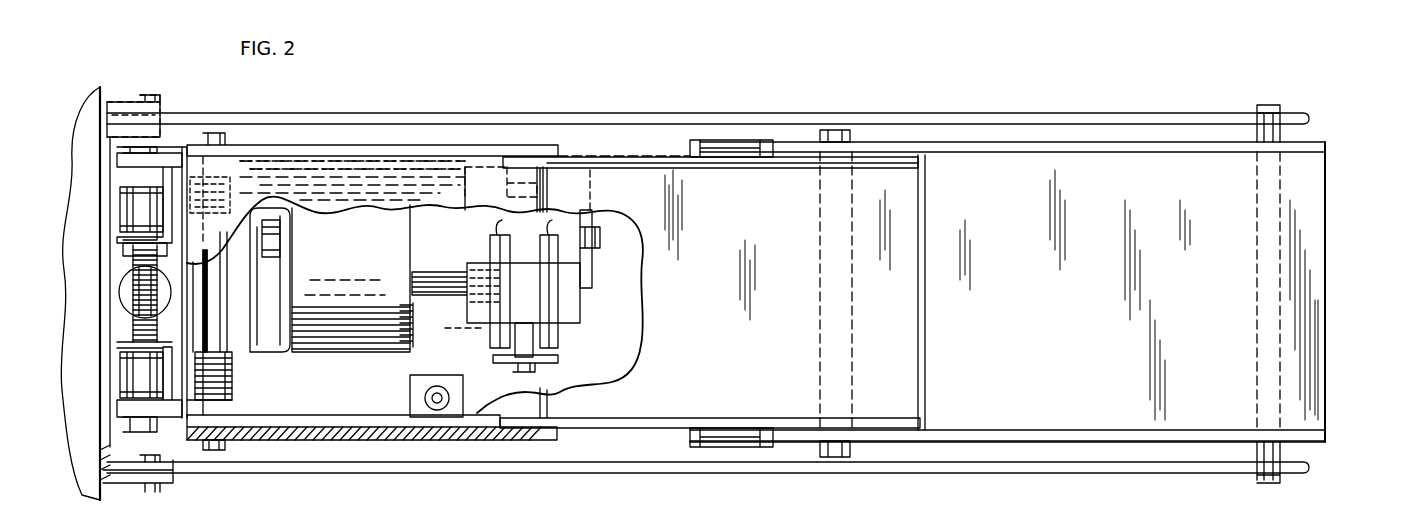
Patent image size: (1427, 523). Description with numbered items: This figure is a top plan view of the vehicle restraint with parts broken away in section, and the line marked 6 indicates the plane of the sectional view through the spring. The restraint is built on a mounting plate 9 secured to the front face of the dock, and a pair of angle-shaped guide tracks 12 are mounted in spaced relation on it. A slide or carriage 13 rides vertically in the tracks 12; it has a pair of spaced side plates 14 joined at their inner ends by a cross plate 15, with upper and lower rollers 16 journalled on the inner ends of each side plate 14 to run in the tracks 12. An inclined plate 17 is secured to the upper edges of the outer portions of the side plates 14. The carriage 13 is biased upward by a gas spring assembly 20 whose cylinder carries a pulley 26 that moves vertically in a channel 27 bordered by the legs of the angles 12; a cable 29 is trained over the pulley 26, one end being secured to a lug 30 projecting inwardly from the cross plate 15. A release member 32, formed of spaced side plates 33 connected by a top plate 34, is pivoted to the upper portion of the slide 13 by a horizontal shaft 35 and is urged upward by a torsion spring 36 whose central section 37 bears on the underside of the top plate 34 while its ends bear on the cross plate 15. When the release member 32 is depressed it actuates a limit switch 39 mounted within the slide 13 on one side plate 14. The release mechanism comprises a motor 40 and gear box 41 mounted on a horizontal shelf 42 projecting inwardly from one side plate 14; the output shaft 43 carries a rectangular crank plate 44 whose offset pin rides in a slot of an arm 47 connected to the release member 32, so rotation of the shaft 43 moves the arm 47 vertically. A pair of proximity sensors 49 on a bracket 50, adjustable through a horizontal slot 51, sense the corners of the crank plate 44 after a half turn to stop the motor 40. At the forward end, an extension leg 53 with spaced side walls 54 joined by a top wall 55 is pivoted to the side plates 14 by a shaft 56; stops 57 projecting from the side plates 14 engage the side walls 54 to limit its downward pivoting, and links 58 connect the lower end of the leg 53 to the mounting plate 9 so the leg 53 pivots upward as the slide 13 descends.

The section line 6- 6 is at (175, 93).
The mounting plate 9 is at (105, 412).
The guide tracks 12 is at (120, 239).
The slide or carriage 13 is at (637, 157).
The side plates 14 is at (663, 160).
The cross plate 15 is at (202, 407).
The rollers 16 is at (113, 200).
The inclined plate 17 is at (777, 182).
The gas spring assembly 20 is at (112, 297).
The pulley 26 is at (120, 307).
The track or channel 27 is at (122, 263).
The cable 29 is at (147, 290).
The lug 30 is at (170, 328).
The release member 32 is at (455, 147).
The side plates of release member 33 is at (418, 147).
The top plate 34 is at (380, 168).
The horizontal shaft 35 is at (215, 452).
The torsion spring 36 is at (233, 370).
The central section of torsion spring 37 is at (300, 265).
The limit switch 39 is at (425, 397).
The motor 40 is at (372, 266).
The gear box 41 is at (570, 225).
The horizontal shelf 42 is at (592, 278).
The output shaft 43 is at (530, 340).
The crank plate 44 is at (500, 358).
The arm 47 is at (560, 395).
The proximity sensors 49 is at (500, 298).
The bracket 50 is at (465, 272).
The horizontal slot 51 is at (450, 329).
The extension leg 53 is at (1326, 228).
The side walls 54 is at (1312, 148).
The top wall 55 is at (1316, 300).
The shaft 56 is at (843, 132).
The stops 57 is at (743, 148).
The arms or links 58 is at (1047, 117).